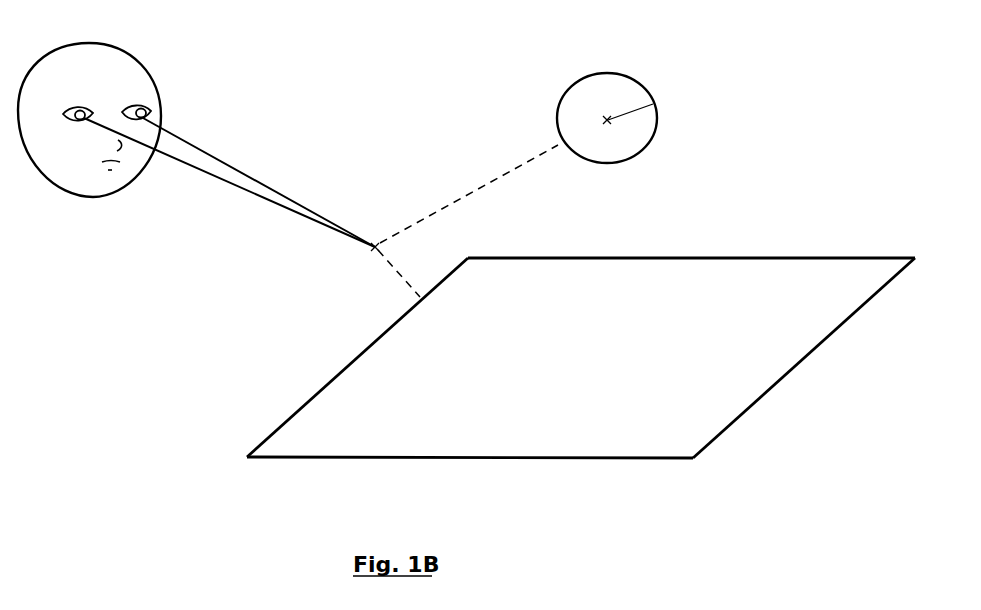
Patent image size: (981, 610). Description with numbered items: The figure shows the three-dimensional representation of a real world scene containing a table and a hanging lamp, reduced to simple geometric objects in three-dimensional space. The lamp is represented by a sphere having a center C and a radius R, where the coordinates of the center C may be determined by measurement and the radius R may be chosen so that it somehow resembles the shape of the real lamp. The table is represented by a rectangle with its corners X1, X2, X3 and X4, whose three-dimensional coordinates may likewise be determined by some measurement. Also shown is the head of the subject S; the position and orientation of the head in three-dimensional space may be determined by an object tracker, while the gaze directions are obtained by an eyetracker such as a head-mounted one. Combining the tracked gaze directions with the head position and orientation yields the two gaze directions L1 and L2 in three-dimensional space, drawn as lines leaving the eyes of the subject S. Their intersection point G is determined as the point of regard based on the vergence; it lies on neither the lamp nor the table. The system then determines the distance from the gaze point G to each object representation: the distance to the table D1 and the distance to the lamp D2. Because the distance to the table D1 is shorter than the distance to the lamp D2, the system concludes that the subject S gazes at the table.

The subject S is at (89, 104).
The gaze direction L1 is at (259, 182).
The gaze direction L2 is at (229, 182).
The gaze direction intersection point G is at (373, 228).
The distance to the table D1 is at (395, 277).
The distance from gaze point to circle center D2 is at (469, 194).
The center C is at (607, 118).
The radius R is at (630, 101).
The corner X1 is at (341, 372).
The corner X2 is at (492, 467).
The corner X3 is at (814, 341).
The corner X4 is at (689, 241).